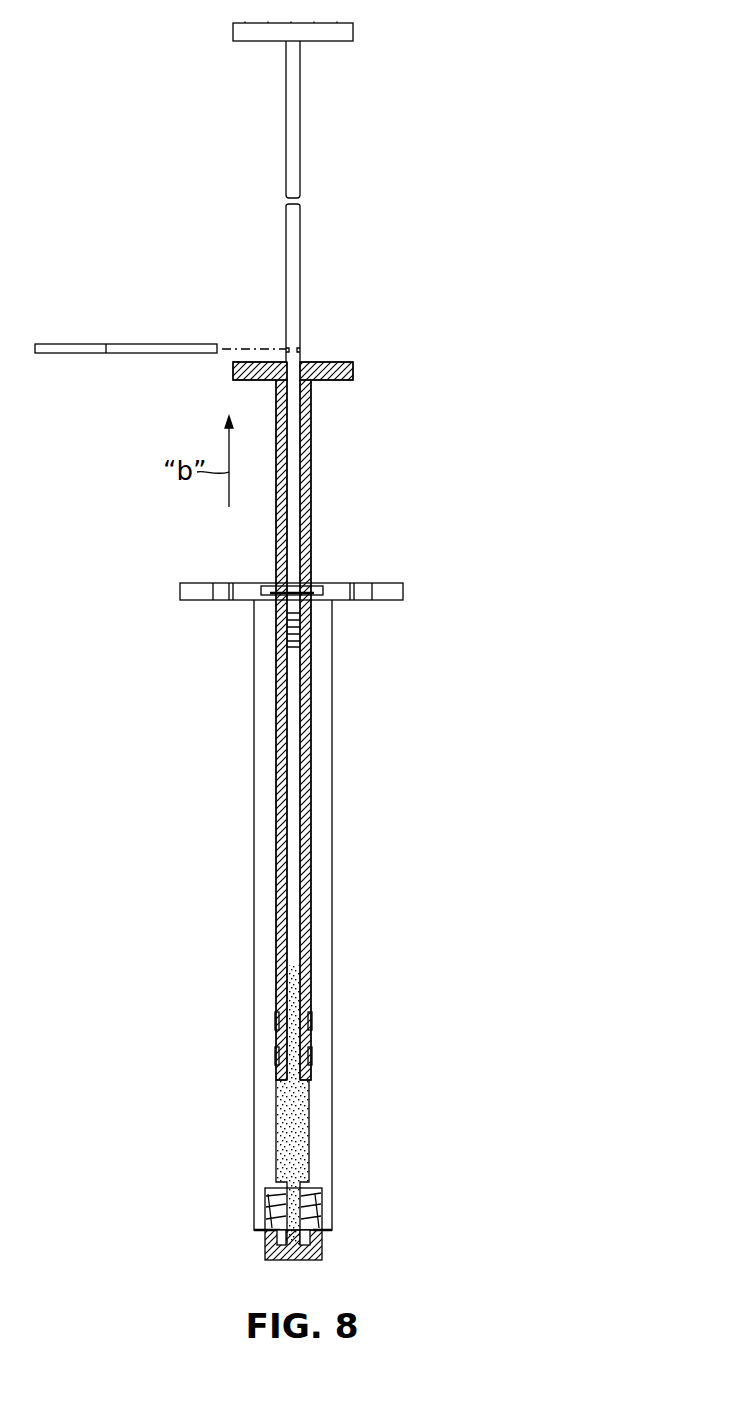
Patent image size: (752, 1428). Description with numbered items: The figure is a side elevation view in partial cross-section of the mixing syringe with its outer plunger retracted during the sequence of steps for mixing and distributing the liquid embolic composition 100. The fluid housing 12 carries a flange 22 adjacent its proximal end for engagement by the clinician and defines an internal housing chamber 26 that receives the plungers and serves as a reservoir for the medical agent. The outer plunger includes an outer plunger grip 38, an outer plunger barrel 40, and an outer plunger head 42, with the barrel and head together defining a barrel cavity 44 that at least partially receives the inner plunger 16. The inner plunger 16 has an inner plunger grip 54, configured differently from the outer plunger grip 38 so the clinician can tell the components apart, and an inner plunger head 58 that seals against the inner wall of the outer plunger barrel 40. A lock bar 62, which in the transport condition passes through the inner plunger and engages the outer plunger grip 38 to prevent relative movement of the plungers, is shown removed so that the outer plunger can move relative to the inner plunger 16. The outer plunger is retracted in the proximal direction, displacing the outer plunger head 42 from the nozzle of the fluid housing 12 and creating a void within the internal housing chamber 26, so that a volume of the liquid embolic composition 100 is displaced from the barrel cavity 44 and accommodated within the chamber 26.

The fluid housing 12 is at (222, 765).
The inner plunger 16 is at (299, 182).
The flange 22 is at (385, 582).
The internal housing chamber 26 is at (333, 727).
The outer plunger grip 38 is at (337, 362).
The outer plunger barrel 40 is at (312, 500).
The outer plunger head 42 is at (313, 1045).
The barrel cavity 44 is at (292, 936).
The inner plunger grip 54 is at (374, 31).
The inner plunger head 58 is at (290, 636).
The lock bar 62 is at (118, 355).
The liquid embolic composition 100 is at (277, 1140).